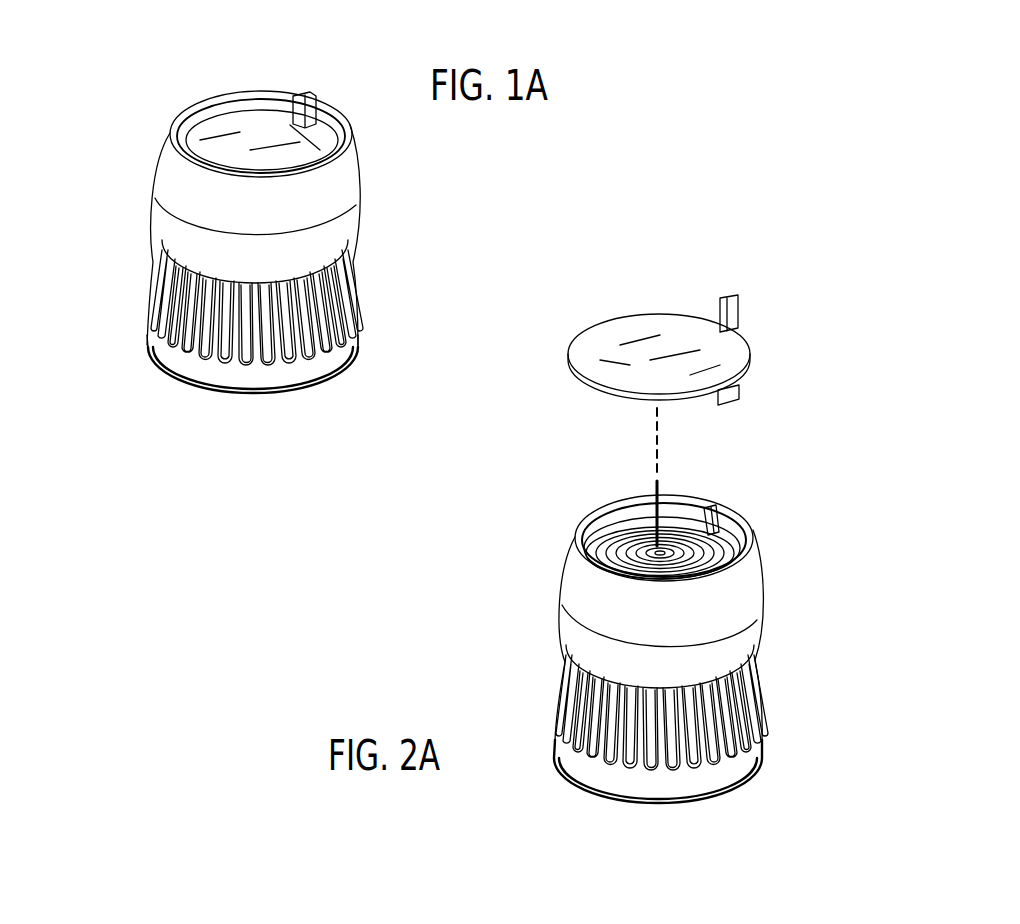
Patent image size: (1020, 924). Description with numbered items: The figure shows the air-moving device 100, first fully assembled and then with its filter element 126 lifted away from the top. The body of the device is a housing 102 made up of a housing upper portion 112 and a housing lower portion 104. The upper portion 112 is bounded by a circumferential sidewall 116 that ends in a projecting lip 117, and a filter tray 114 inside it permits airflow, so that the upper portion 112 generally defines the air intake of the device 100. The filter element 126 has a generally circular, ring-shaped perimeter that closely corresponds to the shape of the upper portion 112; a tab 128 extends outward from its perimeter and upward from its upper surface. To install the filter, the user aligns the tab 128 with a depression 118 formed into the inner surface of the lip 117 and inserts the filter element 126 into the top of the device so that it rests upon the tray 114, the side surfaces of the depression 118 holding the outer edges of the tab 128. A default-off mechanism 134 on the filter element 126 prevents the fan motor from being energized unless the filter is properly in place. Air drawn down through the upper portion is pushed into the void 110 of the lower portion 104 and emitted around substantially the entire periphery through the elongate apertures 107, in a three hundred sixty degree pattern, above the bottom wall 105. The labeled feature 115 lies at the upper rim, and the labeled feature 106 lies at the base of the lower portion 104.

In FIG. 1A, the device 100 is at (400, 168).
In FIG. 1A, the housing 102 is at (368, 211).
In FIG. 2A, the housing 102 is at (566, 634).
In FIG. 1A, the housing lower portion 104 is at (144, 344).
In FIG. 2A, the housing lower portion 104 is at (548, 744).
In FIG. 1A, the bottom wall 105 is at (300, 336).
In FIG. 2A, the bottom wall 105 is at (603, 760).
In FIG. 1A, the base ring 106 is at (345, 350).
In FIG. 2A, the base ring 106 is at (628, 782).
In FIG. 1A, the apertures 107 is at (313, 308).
In FIG. 2A, the apertures 107 is at (733, 751).
In FIG. 1A, the void 110 is at (174, 392).
In FIG. 1A, the housing upper portion 112 is at (156, 153).
In FIG. 2A, the housing upper portion 112 is at (560, 577).
In FIG. 2A, the filter tray 114 is at (616, 523).
In FIG. 2A, the inner wall 115 is at (745, 522).
In FIG. 1A, the circumferential sidewall 116 is at (180, 198).
In FIG. 2A, the circumferential sidewall 116 is at (742, 590).
In FIG. 1A, the projecting lip 117 is at (170, 130).
In FIG. 2A, the projecting lip 117 is at (640, 492).
In FIG. 2A, the depression 118 is at (700, 497).
In FIG. 1A, the filter element 126 is at (213, 122).
In FIG. 2A, the filter element 126 is at (645, 300).
In FIG. 1A, the tab 128 is at (306, 93).
In FIG. 2A, the tab 128 is at (730, 297).
In FIG. 2A, the default-off mechanism 134 is at (741, 400).